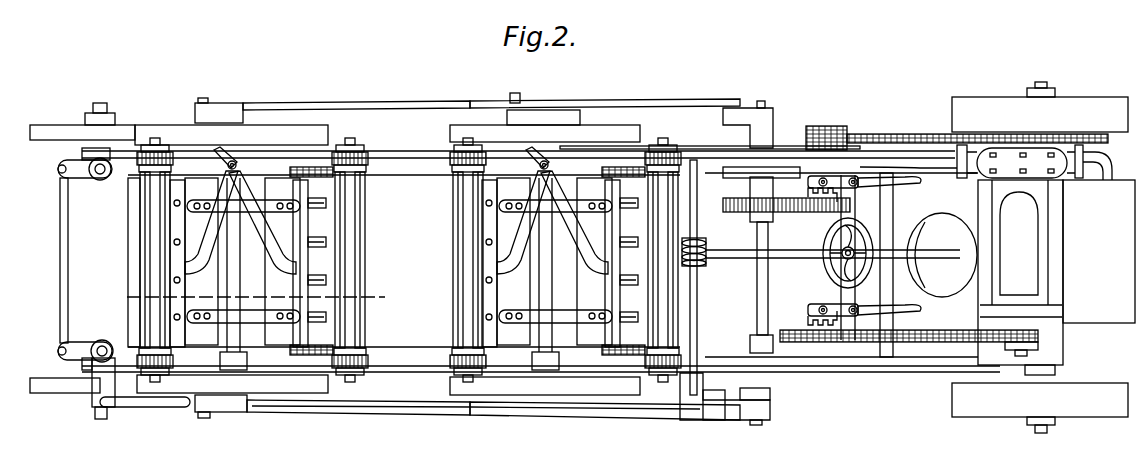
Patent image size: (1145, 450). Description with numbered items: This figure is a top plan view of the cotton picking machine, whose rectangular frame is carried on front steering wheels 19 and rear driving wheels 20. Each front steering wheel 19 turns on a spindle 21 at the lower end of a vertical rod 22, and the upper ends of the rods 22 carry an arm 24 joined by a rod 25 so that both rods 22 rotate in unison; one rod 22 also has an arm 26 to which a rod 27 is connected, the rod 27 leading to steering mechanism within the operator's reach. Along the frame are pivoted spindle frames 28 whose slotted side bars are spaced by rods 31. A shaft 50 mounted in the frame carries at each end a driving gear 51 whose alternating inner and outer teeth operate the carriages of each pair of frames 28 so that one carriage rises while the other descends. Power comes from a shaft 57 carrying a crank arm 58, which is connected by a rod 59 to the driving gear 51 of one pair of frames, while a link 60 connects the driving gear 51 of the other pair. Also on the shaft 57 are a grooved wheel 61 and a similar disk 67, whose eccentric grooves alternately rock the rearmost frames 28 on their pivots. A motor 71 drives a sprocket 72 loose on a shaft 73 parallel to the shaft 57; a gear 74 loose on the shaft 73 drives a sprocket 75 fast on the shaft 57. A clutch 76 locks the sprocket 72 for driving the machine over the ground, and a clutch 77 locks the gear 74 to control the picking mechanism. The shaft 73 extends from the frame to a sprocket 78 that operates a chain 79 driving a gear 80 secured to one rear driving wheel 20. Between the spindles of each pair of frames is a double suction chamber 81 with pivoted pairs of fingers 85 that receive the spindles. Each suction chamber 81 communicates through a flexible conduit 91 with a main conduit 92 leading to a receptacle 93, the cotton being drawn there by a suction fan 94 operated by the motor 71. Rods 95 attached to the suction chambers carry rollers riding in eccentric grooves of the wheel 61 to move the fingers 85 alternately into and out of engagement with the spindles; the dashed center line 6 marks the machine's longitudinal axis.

The center line of machine 6 is at (252, 297).
The front steering wheels 19 is at (53, 127).
The rear driving wheels 20 is at (980, 104).
The spindles 21 is at (104, 104).
The vertical rods 22 is at (103, 178).
The arm 24 is at (58, 180).
The rod 25 is at (62, 266).
The arm 26 is at (98, 412).
The rod 27 is at (160, 406).
The spindle frames 28 is at (142, 226).
The rods 31 is at (143, 246).
The shaft 50 is at (232, 270).
The driving gear 51 is at (150, 126).
The shaft 57 is at (756, 302).
The crank arm 58 is at (745, 107).
The rod 59 is at (616, 100).
The link 60 is at (347, 103).
The wheel 61 is at (753, 348).
The disk 67 is at (786, 165).
The motor 71 is at (1030, 290).
The sprocket 72 is at (846, 365).
The shaft 73 is at (828, 284).
The gear 74 is at (862, 208).
The sprocket 75 is at (740, 214).
The clutch 76 is at (808, 318).
The clutch 77 is at (862, 160).
The sprocket 78 is at (830, 126).
The chain 79 is at (918, 134).
The gear 80 is at (1030, 147).
The suction chamber 81 is at (398, 261).
The fingers 85 is at (326, 270).
The flexible conduit 91 is at (212, 240).
The main conduit 92 is at (698, 155).
The receptacle 93 is at (1056, 277).
The suction fan 94 is at (1082, 148).
The rods 95 is at (700, 172).